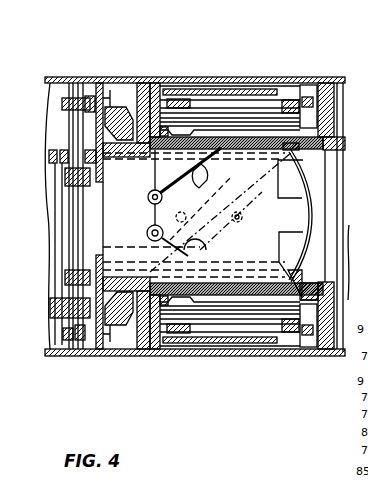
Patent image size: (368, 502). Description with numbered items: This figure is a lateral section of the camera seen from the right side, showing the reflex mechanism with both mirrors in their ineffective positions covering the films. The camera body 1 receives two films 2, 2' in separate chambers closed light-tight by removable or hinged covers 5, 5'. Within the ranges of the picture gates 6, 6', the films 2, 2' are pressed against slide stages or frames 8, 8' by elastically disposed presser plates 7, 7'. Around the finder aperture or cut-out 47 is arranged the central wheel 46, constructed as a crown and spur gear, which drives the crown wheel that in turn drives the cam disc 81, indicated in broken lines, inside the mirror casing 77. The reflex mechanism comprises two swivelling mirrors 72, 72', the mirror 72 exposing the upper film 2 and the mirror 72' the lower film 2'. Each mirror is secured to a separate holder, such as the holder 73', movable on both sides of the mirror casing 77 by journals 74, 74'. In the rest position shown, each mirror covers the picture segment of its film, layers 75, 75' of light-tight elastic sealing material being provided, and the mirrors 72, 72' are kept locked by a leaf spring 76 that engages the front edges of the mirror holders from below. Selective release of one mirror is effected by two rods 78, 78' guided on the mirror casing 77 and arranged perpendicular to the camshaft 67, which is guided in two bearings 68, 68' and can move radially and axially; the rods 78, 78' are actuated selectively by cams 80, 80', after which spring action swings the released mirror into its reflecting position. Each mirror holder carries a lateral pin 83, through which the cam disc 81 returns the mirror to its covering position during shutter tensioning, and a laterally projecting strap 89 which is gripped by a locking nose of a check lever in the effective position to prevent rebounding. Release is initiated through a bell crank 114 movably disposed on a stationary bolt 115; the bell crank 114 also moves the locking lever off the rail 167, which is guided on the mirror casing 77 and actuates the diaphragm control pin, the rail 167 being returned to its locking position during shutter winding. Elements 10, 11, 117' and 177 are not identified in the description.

The camera body 1 is at (333, 356).
The film 2 is at (230, 64).
The film 2' is at (230, 350).
The cover 5 is at (230, 75).
The cover 5' is at (230, 352).
The picture gate 6 is at (230, 88).
The picture gate 6' is at (230, 339).
The presser plate 7 is at (230, 76).
The presser plate 7' is at (230, 347).
The slide stage 8 is at (225, 88).
The slide stage 8' is at (225, 345).
The spacer 10 is at (272, 125).
The end piece 11 is at (296, 113).
The central wheel 46 is at (109, 110).
The finder aperture 47 is at (98, 242).
The camshaft 67 is at (83, 352).
The bearing 68 is at (76, 188).
The bearing 68' is at (71, 363).
The swivelling mirror 72 is at (236, 94).
The swivelling mirror 72' is at (236, 333).
The mirror holder 73' is at (161, 231).
The journal 74 is at (143, 207).
The journal 74' is at (157, 233).
The sealing layer 75 is at (265, 194).
The sealing layer 75' is at (314, 347).
The leaf spring 76 is at (167, 178).
The mirror casing 77 is at (304, 209).
The rod 78 is at (123, 90).
The rod 78' is at (127, 290).
The cam 80 is at (93, 76).
The cam 80' is at (97, 328).
The cam disc 81 is at (185, 208).
The lateral pin 83 is at (214, 193).
The strap 89 is at (331, 152).
The bell crank 114 is at (55, 352).
The stationary bolt 115 is at (64, 92).
The clip 117' is at (87, 275).
The rail 167 is at (311, 222).
The pin 177 is at (246, 219).